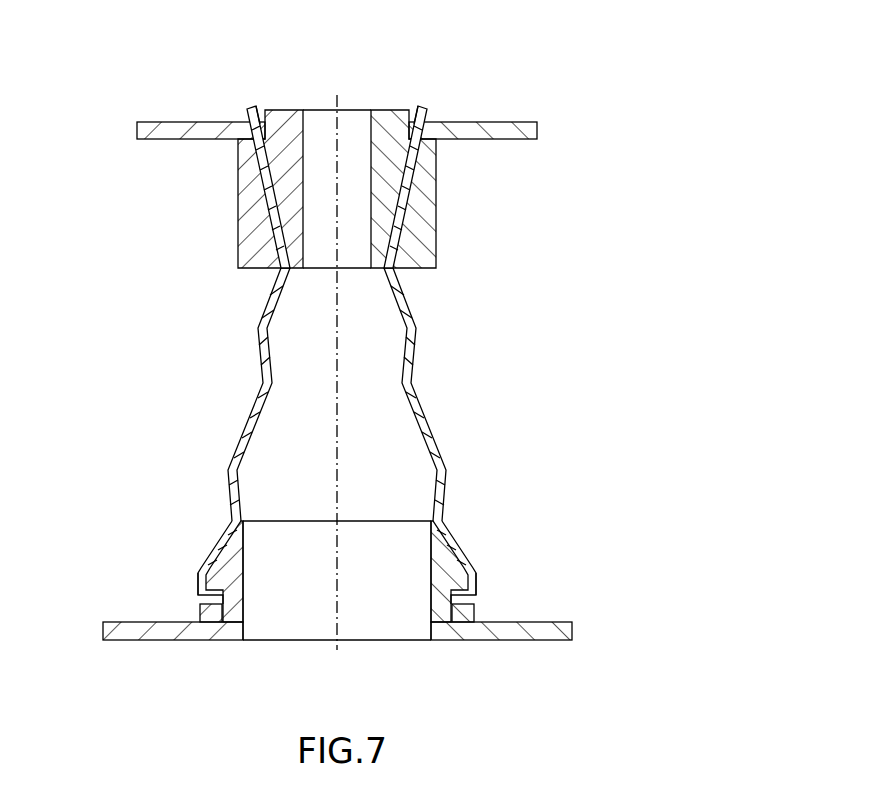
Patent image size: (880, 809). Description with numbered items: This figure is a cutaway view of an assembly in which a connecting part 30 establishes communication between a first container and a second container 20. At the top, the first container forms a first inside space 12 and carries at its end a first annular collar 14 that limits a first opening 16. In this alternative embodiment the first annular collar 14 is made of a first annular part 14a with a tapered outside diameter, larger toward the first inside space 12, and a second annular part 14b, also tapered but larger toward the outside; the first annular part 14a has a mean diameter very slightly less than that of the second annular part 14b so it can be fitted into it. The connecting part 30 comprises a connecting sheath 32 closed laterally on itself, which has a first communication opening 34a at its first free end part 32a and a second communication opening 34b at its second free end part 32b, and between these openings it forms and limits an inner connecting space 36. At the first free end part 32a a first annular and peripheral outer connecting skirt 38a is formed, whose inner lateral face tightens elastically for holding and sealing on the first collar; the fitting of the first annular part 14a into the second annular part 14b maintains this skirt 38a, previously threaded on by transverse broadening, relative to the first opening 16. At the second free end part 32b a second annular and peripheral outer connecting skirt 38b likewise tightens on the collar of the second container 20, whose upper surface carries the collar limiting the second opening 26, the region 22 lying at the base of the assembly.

The first inside space 12 is at (260, 67).
The first annular collar 14 is at (395, 210).
The first annular part 14a is at (250, 188).
The second annular part 14b is at (412, 235).
The first opening 16 is at (318, 270).
The second container 20 is at (578, 633).
The base opening 22 is at (405, 660).
The second opening 26 is at (273, 519).
The connecting part 30 is at (387, 365).
The connecting sheath 32 is at (425, 423).
The first free end part 32a is at (447, 102).
The second free end part 32b is at (472, 553).
The first communication opening 34a is at (358, 203).
The second communication opening 34b is at (392, 548).
The inner connecting space 36 is at (408, 453).
The first annular and peripheral outer connecting skirt 38a is at (422, 168).
The second annular and peripheral outer connecting skirt 38b is at (475, 578).